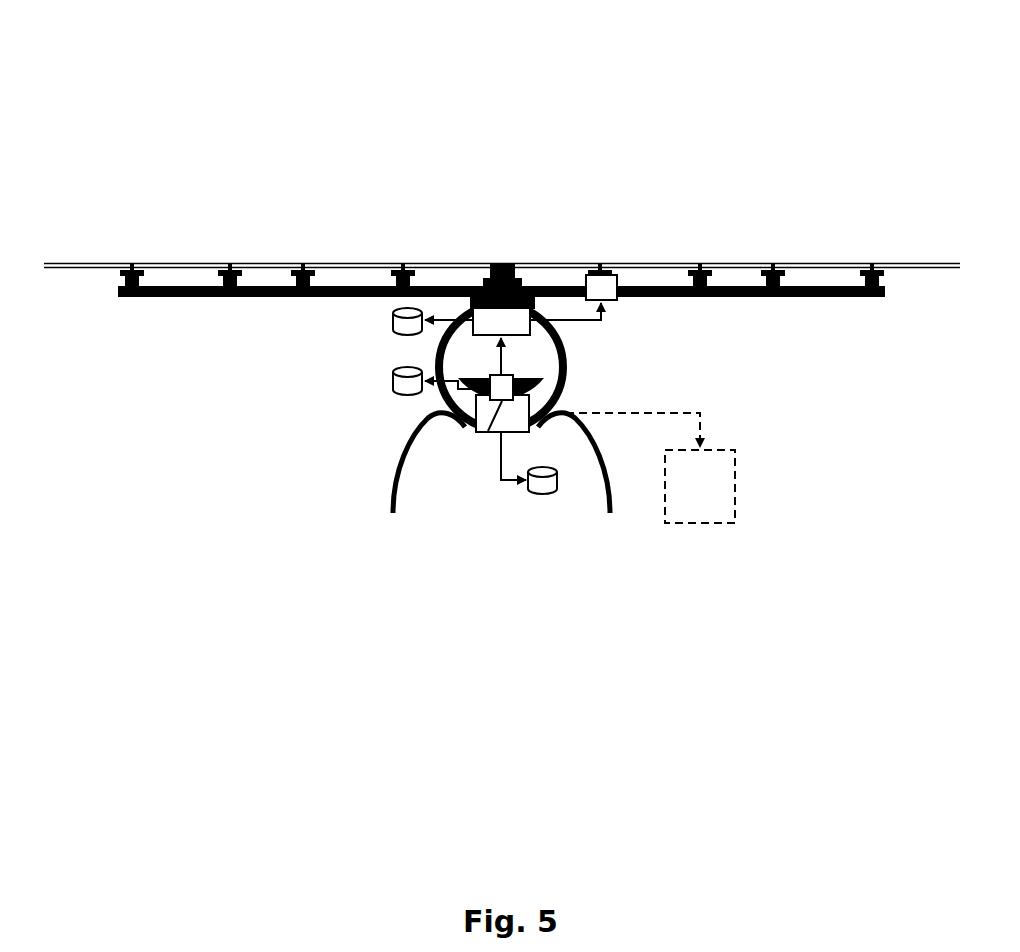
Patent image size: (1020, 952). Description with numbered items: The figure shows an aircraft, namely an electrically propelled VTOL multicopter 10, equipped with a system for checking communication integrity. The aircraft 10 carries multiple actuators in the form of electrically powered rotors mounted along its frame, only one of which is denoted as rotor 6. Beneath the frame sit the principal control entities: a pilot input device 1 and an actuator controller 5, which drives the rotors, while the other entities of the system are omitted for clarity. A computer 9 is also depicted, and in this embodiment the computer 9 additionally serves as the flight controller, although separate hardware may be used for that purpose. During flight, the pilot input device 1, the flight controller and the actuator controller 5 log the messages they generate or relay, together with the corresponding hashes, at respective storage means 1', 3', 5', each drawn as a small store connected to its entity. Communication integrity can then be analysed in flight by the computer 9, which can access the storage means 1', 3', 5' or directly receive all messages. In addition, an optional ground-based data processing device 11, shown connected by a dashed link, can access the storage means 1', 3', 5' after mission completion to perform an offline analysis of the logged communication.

The multicopter 10 is at (544, 183).
The rotor 6 is at (604, 273).
The actuator controller 5 is at (568, 334).
The storage means 5' is at (378, 319).
The storage means 1' is at (389, 381).
The pilot input device 1 is at (475, 421).
The computer 9 is at (530, 437).
The storage means 3' is at (524, 517).
The ground-based data processing device 11 is at (712, 523).